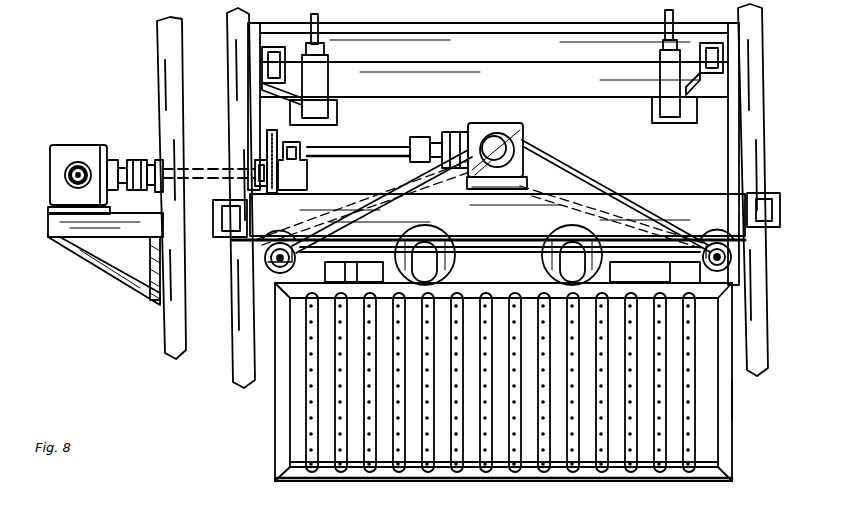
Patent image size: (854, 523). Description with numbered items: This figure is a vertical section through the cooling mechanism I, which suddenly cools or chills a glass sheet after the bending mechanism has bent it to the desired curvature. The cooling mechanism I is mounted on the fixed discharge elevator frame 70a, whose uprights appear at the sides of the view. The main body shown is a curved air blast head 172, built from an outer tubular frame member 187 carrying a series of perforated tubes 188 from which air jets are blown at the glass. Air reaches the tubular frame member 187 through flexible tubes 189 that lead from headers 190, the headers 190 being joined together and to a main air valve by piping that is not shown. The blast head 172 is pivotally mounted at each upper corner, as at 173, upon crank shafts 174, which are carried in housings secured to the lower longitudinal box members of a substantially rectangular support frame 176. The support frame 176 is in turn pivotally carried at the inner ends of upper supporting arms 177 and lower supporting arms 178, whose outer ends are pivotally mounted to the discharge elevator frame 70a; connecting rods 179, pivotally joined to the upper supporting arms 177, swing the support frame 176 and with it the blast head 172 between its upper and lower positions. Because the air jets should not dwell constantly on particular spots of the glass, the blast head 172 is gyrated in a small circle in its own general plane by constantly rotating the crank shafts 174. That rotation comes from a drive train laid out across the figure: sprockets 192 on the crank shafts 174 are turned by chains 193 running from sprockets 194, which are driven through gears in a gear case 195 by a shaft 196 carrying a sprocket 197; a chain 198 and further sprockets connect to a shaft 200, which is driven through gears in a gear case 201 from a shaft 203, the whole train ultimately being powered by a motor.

The discharge elevator frame 70a is at (752, 70).
The blast head 172 is at (283, 411).
The pivotal mounting 173 is at (270, 268).
The crank shaft 174 is at (280, 244).
The support frame 176 is at (537, 29).
The upper supporting arm 177 is at (290, 62).
The lower supporting arm 178 is at (238, 247).
The connecting rod 179 is at (320, 18).
The outer tubular frame member 187 is at (557, 470).
The perforated tube 188 is at (506, 462).
The flexible tube 189 is at (553, 256).
The header 190 is at (486, 260).
The sprocket 192 is at (338, 262).
The chain 193 is at (388, 180).
The sprocket 194 is at (453, 134).
The gear case 195 is at (497, 125).
The shaft 196 is at (358, 153).
The sprocket 197 is at (290, 110).
The chain 198 is at (264, 148).
The shaft 200 is at (198, 180).
The gear case 201 is at (100, 148).
The shaft 203 is at (72, 175).
The cooling mechanism I is at (745, 404).